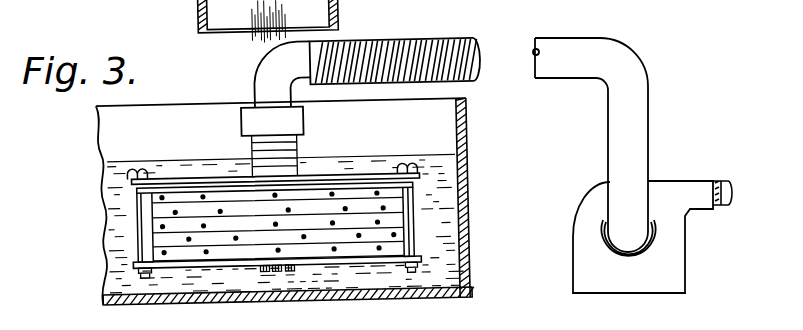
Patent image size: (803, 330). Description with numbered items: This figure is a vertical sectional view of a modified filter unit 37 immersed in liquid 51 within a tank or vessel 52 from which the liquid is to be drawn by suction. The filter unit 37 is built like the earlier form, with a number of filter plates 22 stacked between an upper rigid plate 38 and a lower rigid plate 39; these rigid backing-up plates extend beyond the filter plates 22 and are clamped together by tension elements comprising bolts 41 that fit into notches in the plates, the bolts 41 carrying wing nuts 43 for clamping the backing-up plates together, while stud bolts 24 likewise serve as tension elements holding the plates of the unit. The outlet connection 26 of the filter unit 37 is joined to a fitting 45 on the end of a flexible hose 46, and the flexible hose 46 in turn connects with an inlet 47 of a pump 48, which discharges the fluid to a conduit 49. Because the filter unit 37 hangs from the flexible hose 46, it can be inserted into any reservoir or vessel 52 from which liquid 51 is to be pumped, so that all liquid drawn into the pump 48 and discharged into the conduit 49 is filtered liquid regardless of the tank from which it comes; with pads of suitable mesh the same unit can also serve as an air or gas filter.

The filter plates 22 is at (397, 223).
The stud bolts 24 is at (263, 272).
The outlet connection 26 is at (302, 142).
The filter unit 37 is at (358, 168).
The upper rigid plate 38 is at (203, 170).
The lower rigid plate 39 is at (250, 265).
The bolts 41 is at (140, 224).
The wing nuts 43 is at (107, 168).
The fitting 45 is at (257, 76).
The flexible hose 46 is at (453, 48).
The inlet 47 is at (650, 232).
The pump 48 is at (663, 168).
The conduit 49 is at (725, 178).
The liquid 51 is at (150, 159).
The tank or vessel 52 is at (469, 152).